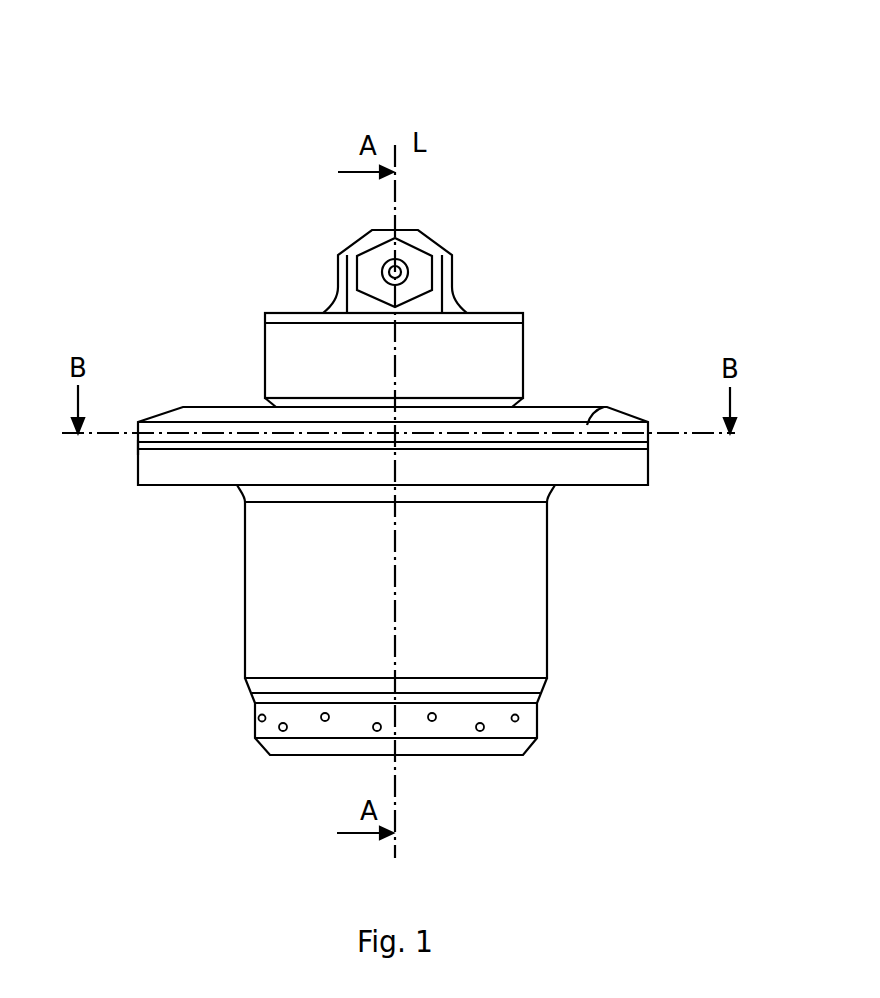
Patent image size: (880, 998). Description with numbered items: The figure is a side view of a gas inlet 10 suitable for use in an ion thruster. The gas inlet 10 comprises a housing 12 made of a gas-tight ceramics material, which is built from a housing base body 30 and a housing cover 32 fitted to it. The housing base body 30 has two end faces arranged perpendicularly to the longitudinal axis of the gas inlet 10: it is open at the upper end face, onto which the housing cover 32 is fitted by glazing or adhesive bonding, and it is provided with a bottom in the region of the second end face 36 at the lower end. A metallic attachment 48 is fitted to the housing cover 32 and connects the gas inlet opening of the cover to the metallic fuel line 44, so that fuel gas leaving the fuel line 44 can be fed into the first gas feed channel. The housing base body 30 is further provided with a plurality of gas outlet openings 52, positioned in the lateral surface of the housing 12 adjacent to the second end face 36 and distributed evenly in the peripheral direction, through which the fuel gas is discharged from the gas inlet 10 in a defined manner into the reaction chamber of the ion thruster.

The gas inlet 10 is at (80, 88).
The housing 12 is at (128, 448).
The housing base body 30 is at (283, 601).
The housing cover 32 is at (215, 415).
The second end face 36 is at (290, 757).
The fuel line 44 is at (412, 260).
The metallic attachment 48 is at (535, 323).
The gas outlet openings 52 is at (279, 728).